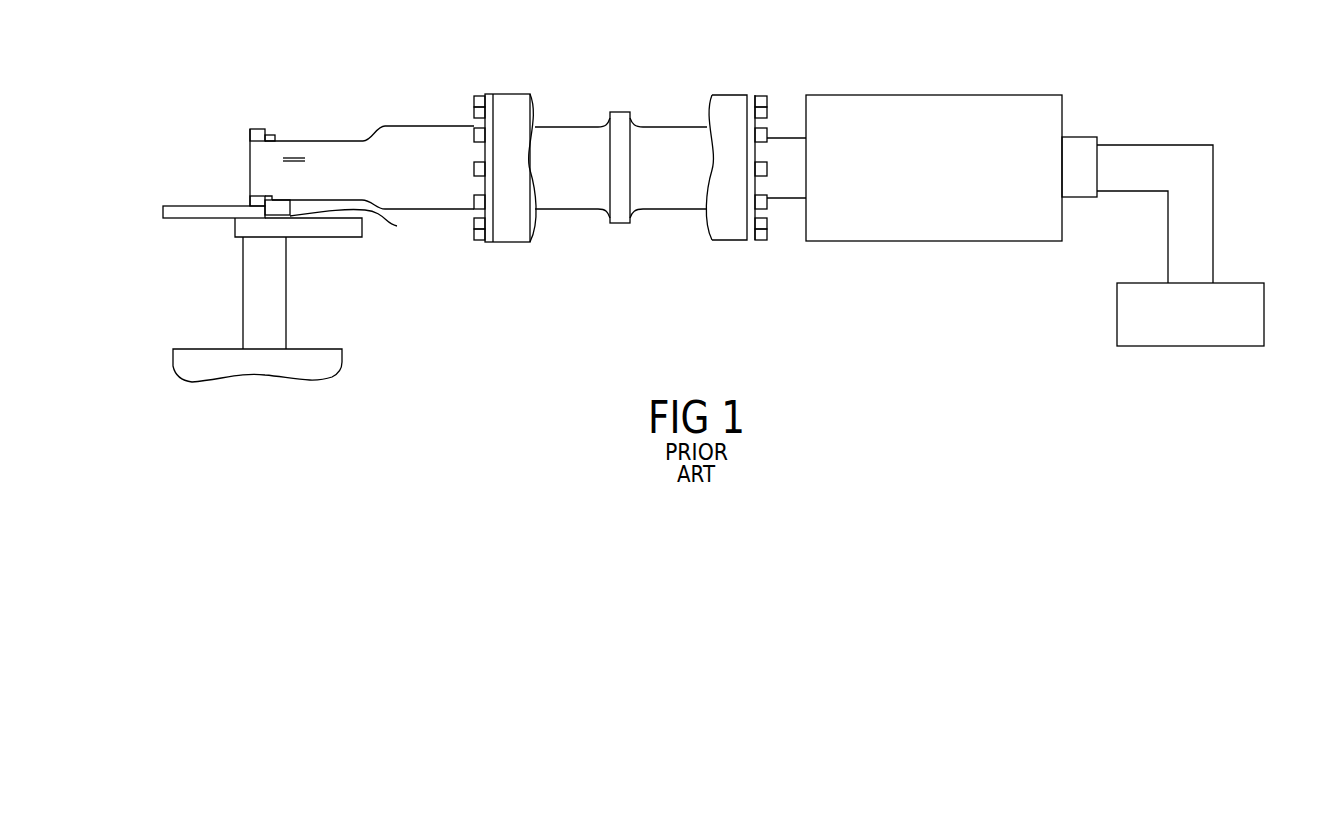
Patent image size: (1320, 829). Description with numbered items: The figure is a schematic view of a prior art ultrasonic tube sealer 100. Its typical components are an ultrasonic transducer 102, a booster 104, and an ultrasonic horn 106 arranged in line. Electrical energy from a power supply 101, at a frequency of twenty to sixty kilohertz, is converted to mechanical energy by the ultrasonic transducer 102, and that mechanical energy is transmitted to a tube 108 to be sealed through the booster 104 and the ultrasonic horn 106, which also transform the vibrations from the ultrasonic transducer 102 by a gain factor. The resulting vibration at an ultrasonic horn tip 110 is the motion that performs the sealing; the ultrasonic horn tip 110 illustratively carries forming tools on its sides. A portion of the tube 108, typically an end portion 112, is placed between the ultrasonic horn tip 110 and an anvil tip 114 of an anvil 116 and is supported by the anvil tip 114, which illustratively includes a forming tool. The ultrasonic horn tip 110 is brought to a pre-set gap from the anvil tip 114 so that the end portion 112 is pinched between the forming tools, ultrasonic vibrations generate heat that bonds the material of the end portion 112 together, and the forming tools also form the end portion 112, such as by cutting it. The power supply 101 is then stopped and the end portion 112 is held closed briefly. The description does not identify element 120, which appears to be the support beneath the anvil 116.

The ultrasonic tube sealer 100 is at (1127, 105).
The power supply 101 is at (1117, 313).
The ultrasonic transducer 102 is at (930, 242).
The booster 104 is at (620, 112).
The ultrasonic horn 106 is at (385, 126).
The tube 108 is at (197, 221).
The ultrasonic horn tip 110 is at (250, 201).
The end portion 112 is at (277, 217).
The anvil tip 114 is at (359, 223).
The anvil 116 is at (340, 238).
The support stand 120 is at (286, 300).